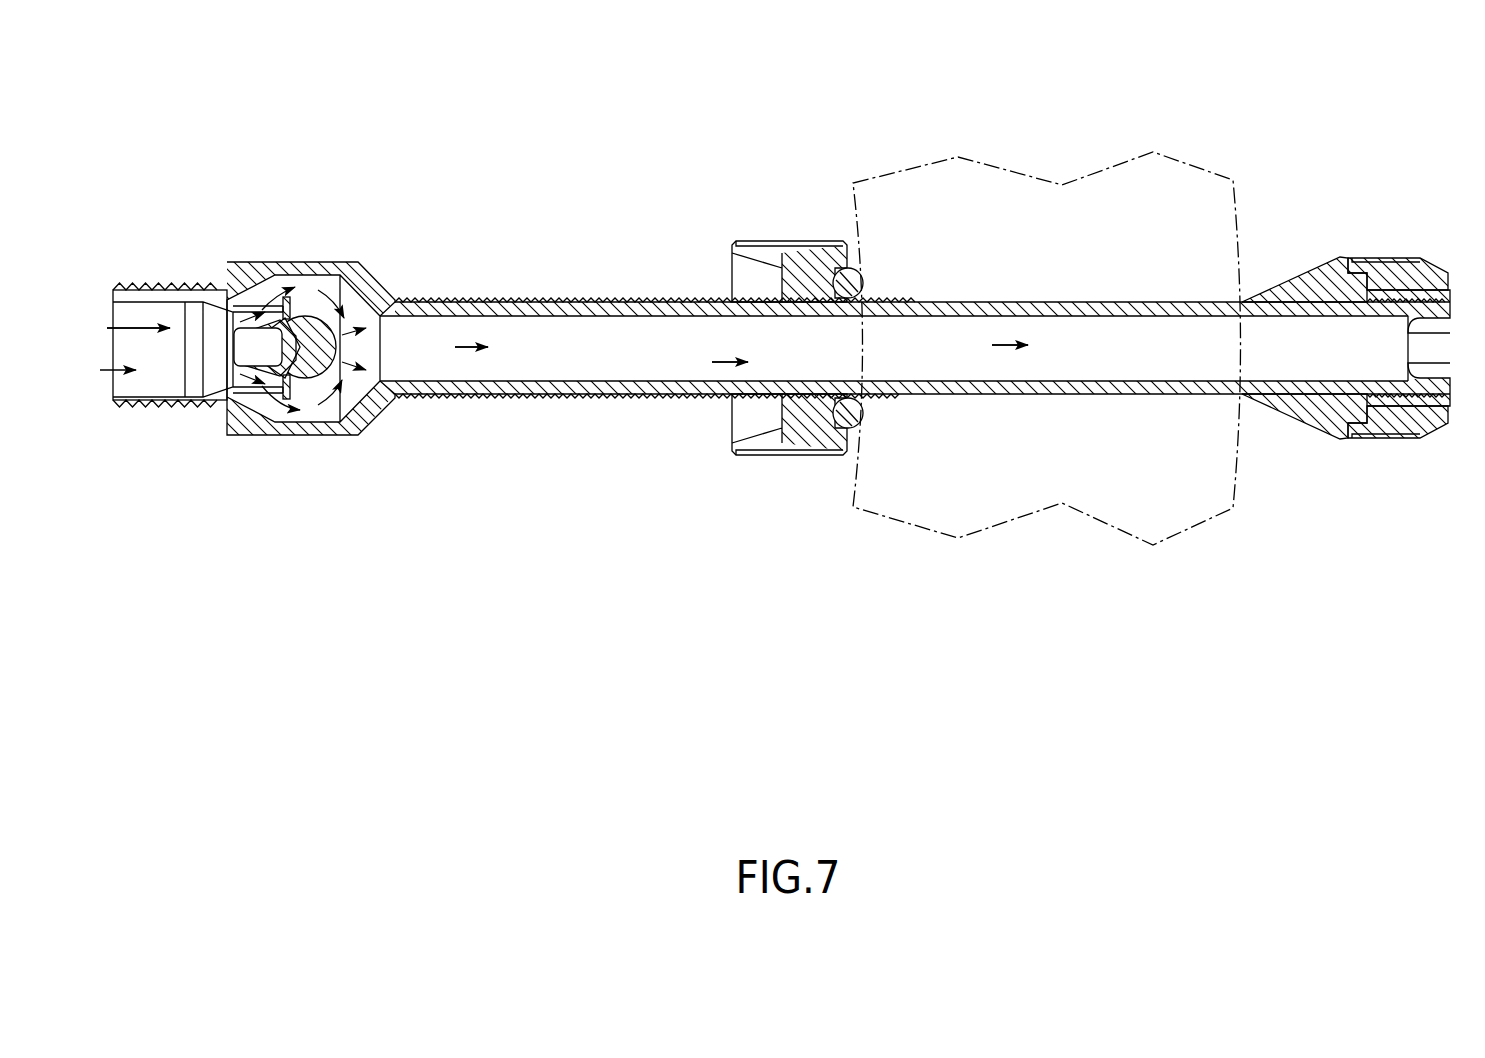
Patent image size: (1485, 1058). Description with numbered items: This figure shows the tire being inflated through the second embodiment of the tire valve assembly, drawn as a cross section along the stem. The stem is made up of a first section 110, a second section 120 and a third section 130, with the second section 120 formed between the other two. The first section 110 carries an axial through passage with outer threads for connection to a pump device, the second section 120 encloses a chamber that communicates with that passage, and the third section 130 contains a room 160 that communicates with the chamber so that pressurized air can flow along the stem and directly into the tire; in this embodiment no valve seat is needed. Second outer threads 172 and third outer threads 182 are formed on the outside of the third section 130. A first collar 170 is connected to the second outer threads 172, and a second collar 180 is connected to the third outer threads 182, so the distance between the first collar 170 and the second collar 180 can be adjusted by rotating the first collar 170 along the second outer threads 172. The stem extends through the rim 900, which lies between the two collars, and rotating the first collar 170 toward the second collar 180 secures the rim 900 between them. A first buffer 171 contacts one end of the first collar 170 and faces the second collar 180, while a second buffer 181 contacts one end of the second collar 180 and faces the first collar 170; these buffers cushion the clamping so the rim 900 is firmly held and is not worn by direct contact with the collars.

The first section 110 is at (155, 280).
The second section 120 is at (290, 253).
The third section 130 is at (522, 298).
The room 160 is at (521, 364).
The first collar 170 is at (776, 239).
The first buffer 171 is at (860, 280).
The second outer threads 172 is at (650, 300).
The second collar 180 is at (1388, 290).
The second buffer 181 is at (1288, 274).
The third outer threads 182 is at (1380, 290).
The rim 900 is at (1056, 168).